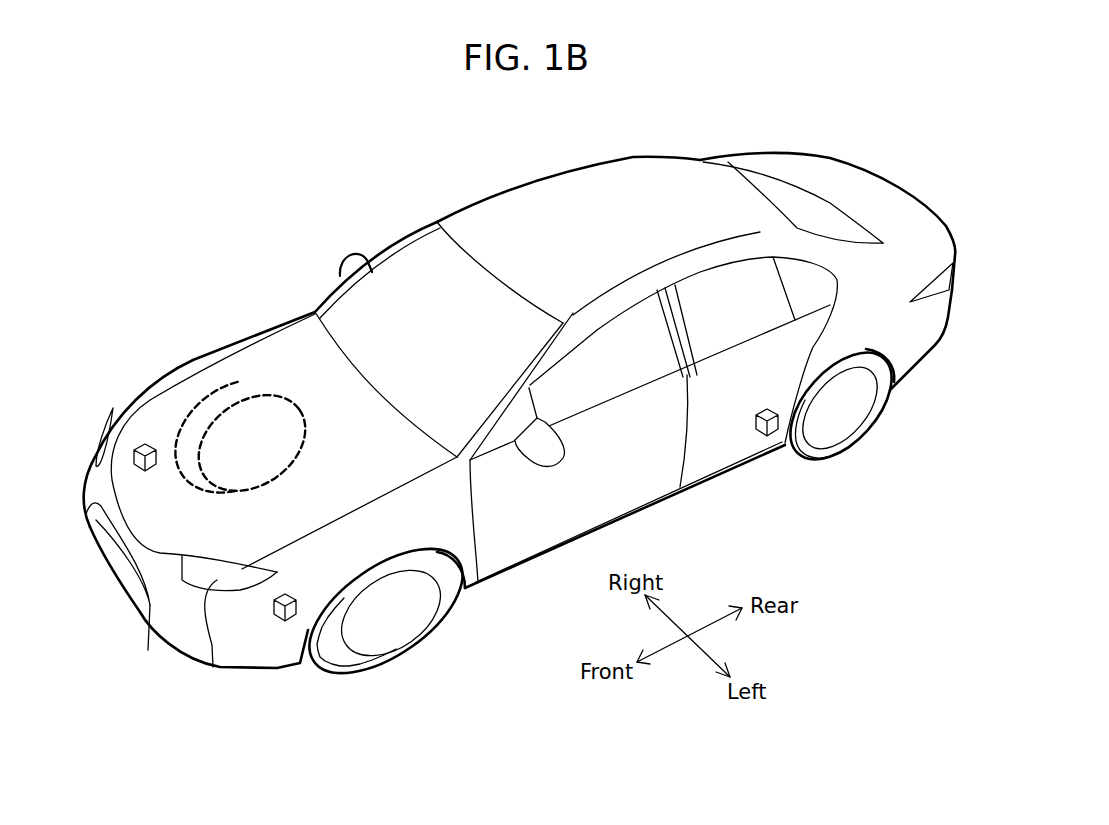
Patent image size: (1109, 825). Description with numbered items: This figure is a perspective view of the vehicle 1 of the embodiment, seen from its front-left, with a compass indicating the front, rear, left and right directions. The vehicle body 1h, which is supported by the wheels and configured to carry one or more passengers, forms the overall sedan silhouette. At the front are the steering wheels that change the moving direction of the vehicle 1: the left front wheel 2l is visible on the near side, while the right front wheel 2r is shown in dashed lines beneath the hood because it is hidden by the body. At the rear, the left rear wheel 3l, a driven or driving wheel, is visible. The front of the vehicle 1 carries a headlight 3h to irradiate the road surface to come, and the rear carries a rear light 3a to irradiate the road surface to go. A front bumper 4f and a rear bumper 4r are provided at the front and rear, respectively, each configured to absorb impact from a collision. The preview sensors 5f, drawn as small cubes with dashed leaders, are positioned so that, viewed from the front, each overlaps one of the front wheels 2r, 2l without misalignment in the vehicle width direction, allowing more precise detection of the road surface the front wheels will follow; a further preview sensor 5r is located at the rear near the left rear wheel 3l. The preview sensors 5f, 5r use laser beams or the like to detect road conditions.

The vehicle 1 is at (287, 236).
The vehicle body 1h is at (510, 184).
The right front wheel 2r is at (222, 375).
The left front wheel 2l is at (386, 660).
The left rear wheel 3l is at (832, 455).
The headlight 3h is at (103, 447).
The rear light 3a is at (944, 283).
The front bumper 4f is at (170, 610).
The rear bumper 4r is at (950, 318).
The preview sensor 5f is at (143, 443).
The preview sensor 5r is at (760, 430).